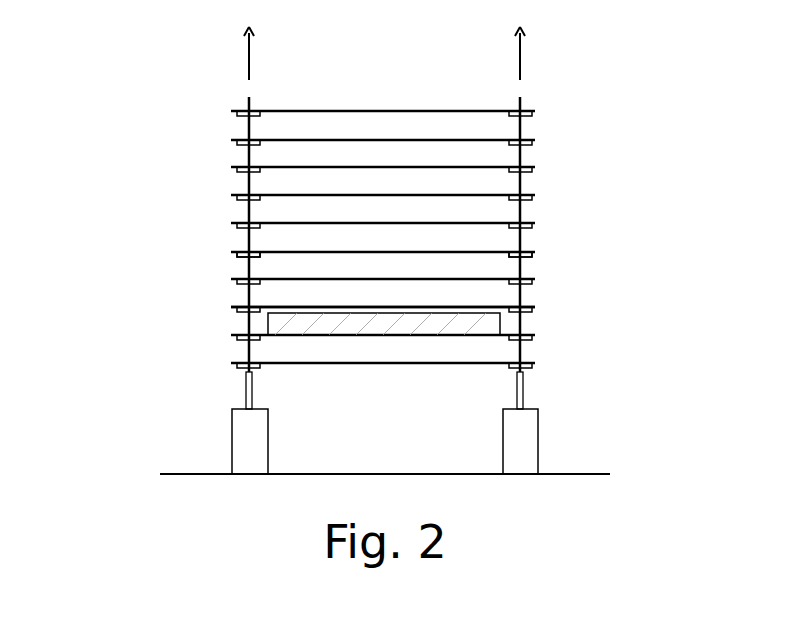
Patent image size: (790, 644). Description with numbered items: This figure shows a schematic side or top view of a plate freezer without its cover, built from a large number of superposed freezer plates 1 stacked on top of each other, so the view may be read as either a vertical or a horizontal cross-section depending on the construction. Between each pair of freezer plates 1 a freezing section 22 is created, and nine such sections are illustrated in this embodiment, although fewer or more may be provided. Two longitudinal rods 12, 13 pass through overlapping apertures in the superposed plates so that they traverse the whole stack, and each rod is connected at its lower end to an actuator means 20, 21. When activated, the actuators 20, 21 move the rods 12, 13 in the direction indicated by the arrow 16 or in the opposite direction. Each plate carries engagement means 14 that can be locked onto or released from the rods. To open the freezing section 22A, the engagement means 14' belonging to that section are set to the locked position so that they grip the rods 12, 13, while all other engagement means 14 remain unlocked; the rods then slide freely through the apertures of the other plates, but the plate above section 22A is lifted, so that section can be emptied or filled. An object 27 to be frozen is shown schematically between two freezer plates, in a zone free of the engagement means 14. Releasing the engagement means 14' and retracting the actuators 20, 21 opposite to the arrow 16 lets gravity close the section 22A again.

The freezer plate 1 is at (496, 195).
The longitudinal rod 12 is at (521, 127).
The longitudinal rod 13 is at (247, 126).
The engagement means 14 is at (387, 213).
The engagement means 14' is at (390, 285).
The arrow 16 is at (384, 53).
The actuator means 20 is at (525, 420).
The actuator means 21 is at (243, 420).
The freezing section 22 is at (383, 237).
The freezing section 22A is at (383, 293).
The object to be frozen 27 is at (500, 318).